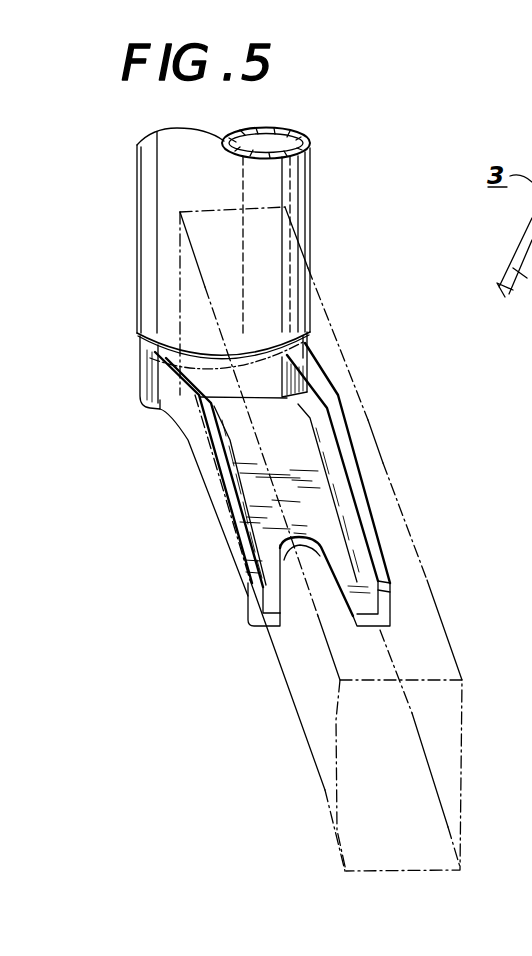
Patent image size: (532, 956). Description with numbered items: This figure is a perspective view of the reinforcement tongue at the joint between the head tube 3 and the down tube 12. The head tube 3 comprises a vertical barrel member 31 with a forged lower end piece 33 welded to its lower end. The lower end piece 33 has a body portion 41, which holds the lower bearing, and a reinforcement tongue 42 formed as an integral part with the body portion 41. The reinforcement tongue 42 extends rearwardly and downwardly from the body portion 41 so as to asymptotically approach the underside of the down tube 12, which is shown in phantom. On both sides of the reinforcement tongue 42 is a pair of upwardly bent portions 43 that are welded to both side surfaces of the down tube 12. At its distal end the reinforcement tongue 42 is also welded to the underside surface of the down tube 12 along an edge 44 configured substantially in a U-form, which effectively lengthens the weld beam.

The head tube 3 is at (311, 201).
The down tube 12 is at (462, 659).
The vertical barrel member 31 is at (137, 244).
The lower end piece 33 is at (136, 363).
The body portion 41 is at (141, 397).
The reinforcement tongue 42 is at (250, 487).
The upwardly bent portions 43 is at (240, 572).
The edge 44 is at (266, 587).